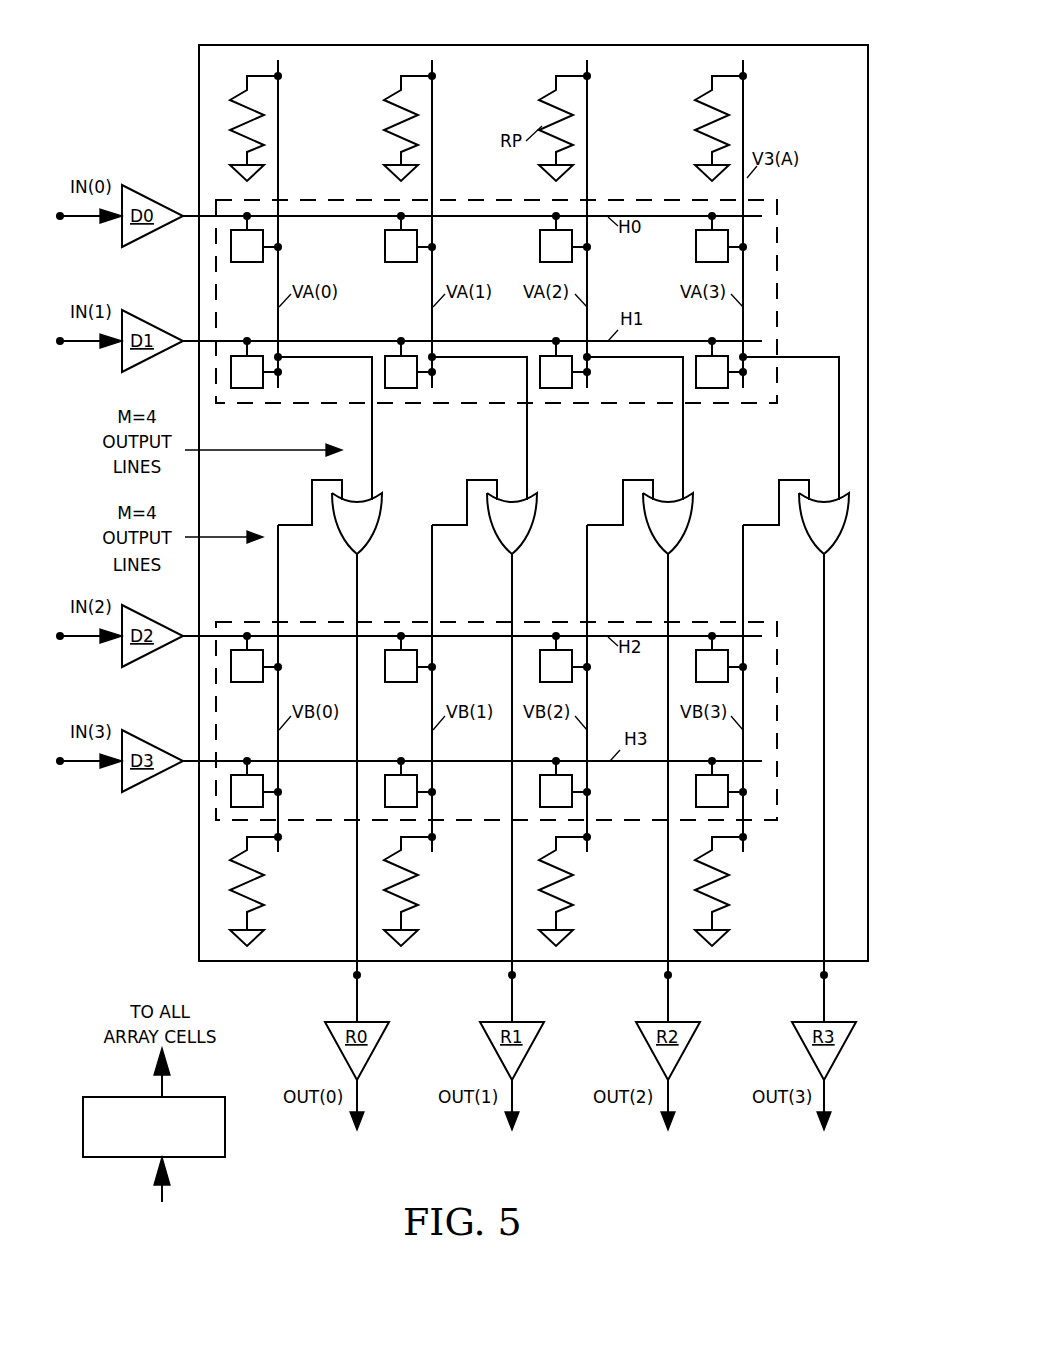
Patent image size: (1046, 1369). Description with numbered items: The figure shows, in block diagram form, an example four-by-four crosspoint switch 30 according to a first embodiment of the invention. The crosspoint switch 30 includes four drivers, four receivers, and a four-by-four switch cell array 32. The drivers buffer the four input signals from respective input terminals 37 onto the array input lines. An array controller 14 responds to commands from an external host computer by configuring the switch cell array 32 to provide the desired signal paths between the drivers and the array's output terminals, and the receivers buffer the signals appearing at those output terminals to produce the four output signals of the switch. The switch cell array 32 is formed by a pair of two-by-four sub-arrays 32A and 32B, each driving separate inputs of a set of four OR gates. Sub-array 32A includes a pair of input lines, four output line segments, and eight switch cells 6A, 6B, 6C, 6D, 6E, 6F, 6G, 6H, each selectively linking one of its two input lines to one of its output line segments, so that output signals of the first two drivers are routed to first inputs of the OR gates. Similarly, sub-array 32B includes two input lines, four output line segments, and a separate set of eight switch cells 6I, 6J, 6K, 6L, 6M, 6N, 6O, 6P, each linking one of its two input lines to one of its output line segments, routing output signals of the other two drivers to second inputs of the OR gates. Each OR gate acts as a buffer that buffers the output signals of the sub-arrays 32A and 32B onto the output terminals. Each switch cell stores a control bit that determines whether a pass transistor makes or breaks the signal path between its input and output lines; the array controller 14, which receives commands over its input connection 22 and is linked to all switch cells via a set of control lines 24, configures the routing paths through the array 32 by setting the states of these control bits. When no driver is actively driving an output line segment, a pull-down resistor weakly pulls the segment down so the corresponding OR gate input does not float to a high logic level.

The switch cell array 32 is at (699, 45).
The sub-array 32A is at (232, 406).
The sub-array 32B is at (300, 620).
The input terminal 37 is at (75, 222).
The switch cell 6A is at (256, 237).
The switch cell 6B is at (410, 237).
The switch cell 6C is at (565, 237).
The switch cell 6D is at (721, 237).
The switch cell 6E is at (256, 362).
The switch cell 6F is at (410, 362).
The switch cell 6G is at (565, 362).
The switch cell 6H is at (721, 362).
The switch cell 6I is at (256, 657).
The switch cell 6J is at (410, 657).
The switch cell 6K is at (565, 657).
The switch cell 6L is at (721, 657).
The switch cell 6M is at (256, 782).
The switch cell 6N is at (410, 782).
The switch cell 6O is at (565, 782).
The switch cell 6P is at (721, 782).
The array controller 14 is at (154, 1127).
The controller input 22 is at (160, 1188).
The control lines 24 is at (157, 1078).
The crosspoint switch 30 is at (723, 1140).